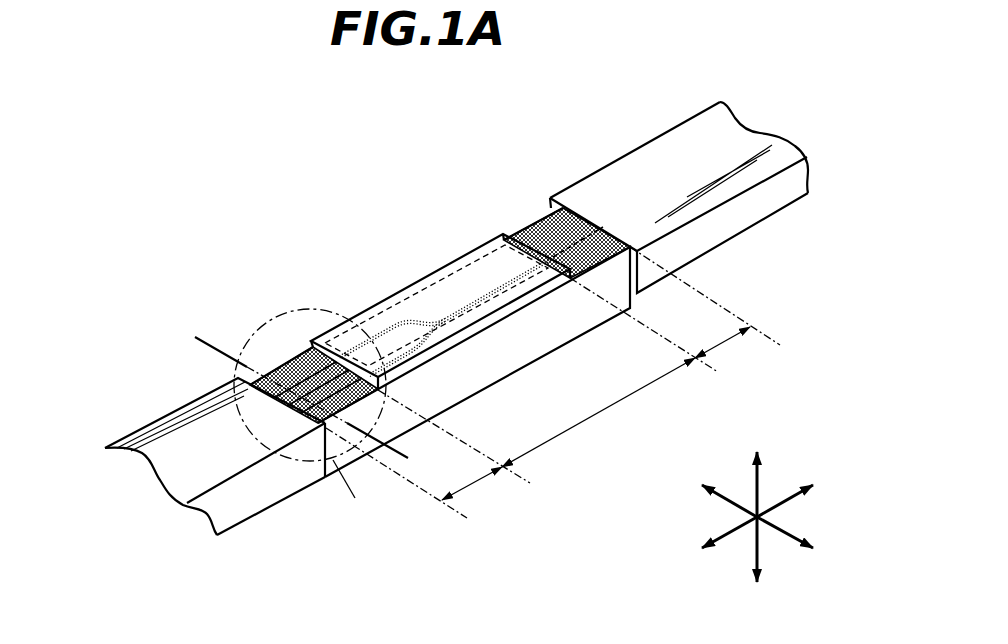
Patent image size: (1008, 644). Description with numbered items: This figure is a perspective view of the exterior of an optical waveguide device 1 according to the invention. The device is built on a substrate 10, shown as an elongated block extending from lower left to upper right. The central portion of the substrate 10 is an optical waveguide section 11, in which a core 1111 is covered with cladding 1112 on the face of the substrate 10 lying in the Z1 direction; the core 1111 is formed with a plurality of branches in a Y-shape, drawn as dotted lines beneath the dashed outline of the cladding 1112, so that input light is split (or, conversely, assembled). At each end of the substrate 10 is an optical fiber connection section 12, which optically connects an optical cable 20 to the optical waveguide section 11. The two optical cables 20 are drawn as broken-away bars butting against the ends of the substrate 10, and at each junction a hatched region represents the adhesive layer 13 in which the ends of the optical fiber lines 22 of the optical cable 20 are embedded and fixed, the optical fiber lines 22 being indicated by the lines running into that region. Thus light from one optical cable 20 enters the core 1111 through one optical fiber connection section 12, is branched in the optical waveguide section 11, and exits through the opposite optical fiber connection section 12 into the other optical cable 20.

The optical waveguide device 1 is at (392, 138).
The substrate 10 is at (502, 365).
The optical waveguide section 11 is at (598, 412).
The optical fiber connection section 12 is at (553, 382).
The adhesive layer 13 is at (272, 370).
The optical cable 20 is at (162, 423).
The optical fiber lines 22 is at (318, 383).
The core 1111 is at (428, 322).
The cladding 1112 is at (427, 277).